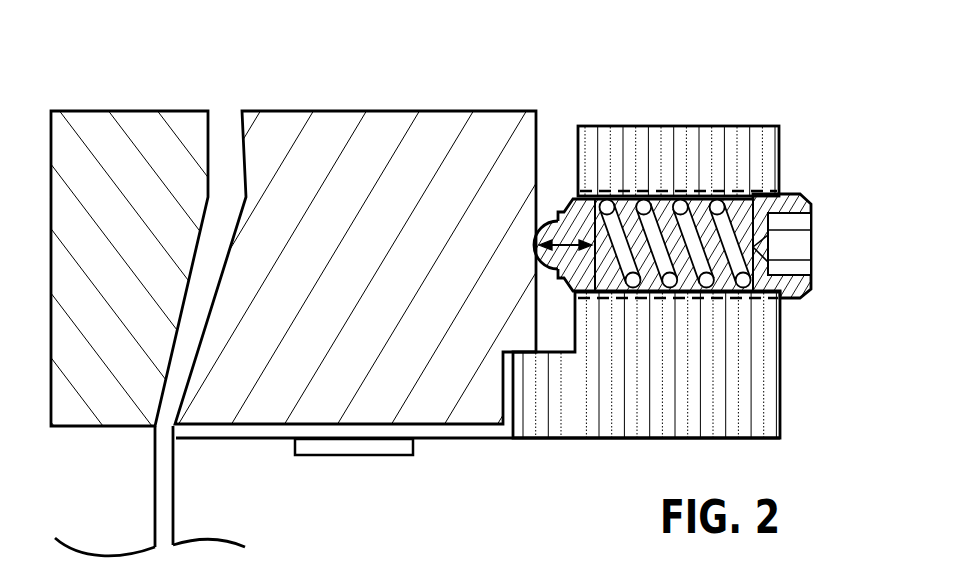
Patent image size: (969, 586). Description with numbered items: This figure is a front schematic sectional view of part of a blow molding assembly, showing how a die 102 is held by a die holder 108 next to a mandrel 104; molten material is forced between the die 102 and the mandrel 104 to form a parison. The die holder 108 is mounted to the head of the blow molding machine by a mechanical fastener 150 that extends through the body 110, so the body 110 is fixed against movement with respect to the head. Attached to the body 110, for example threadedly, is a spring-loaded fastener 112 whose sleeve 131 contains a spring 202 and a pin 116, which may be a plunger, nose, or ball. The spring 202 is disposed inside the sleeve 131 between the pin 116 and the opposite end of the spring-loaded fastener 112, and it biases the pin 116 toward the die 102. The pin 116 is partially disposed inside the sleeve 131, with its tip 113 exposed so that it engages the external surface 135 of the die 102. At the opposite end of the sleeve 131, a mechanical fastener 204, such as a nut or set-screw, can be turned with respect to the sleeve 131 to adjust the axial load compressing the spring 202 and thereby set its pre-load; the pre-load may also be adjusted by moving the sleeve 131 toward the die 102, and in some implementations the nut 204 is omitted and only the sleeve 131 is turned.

The die 102 is at (381, 209).
The mandrel 104 is at (163, 217).
The die holder 108 is at (778, 95).
The body 110 is at (623, 125).
The spring-loaded fastener 112 is at (783, 190).
The tip 113 is at (539, 232).
The pin 116 is at (572, 289).
The sleeve 131 is at (695, 297).
The external surface 135 is at (540, 142).
The mechanical fastener 150 is at (368, 456).
The spring 202 is at (679, 198).
The mechanical fastener 204 is at (806, 196).